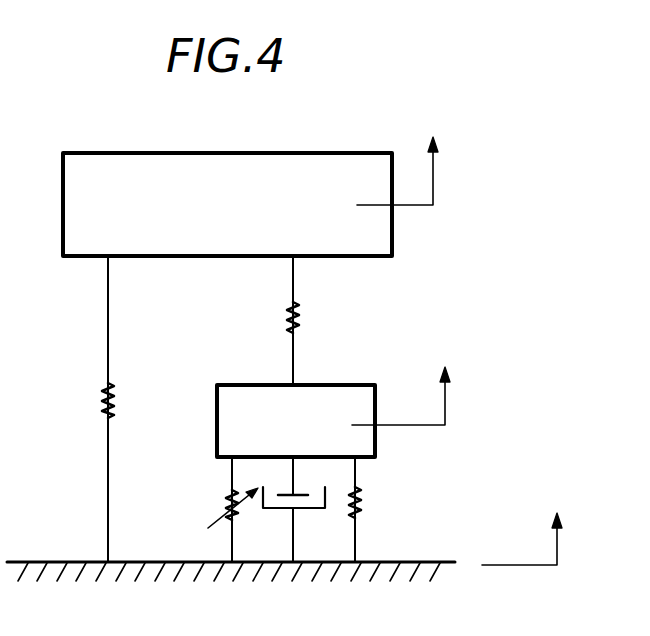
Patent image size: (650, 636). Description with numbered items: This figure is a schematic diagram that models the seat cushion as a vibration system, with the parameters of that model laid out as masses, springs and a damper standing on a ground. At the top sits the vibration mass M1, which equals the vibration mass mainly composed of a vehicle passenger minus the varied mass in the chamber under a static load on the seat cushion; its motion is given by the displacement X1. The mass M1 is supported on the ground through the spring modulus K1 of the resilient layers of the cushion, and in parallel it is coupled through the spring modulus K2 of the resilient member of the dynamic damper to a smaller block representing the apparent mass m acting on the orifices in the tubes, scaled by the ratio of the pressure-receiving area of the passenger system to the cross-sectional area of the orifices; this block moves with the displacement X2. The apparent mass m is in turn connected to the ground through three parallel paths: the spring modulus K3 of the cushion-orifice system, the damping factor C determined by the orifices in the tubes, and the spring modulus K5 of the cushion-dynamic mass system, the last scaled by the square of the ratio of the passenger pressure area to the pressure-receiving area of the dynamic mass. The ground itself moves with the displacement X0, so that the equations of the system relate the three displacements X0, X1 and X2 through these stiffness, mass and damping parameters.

The vibration mass M1 is at (227, 204).
The spring modulus of the resilient layers K1 is at (124, 409).
The spring modulus of the resilient member of the dynamic damper K2 is at (307, 320).
The apparent mass acting on the orifices m is at (290, 420).
The spring modulus of the cushion-orifice system K3 is at (225, 509).
The damping factor C is at (294, 509).
The spring modulus of the cushion-dynamic mass system K5 is at (430, 506).
The displacement X1 is at (400, 157).
The displacement X2 is at (403, 384).
The displacement X0 is at (525, 529).